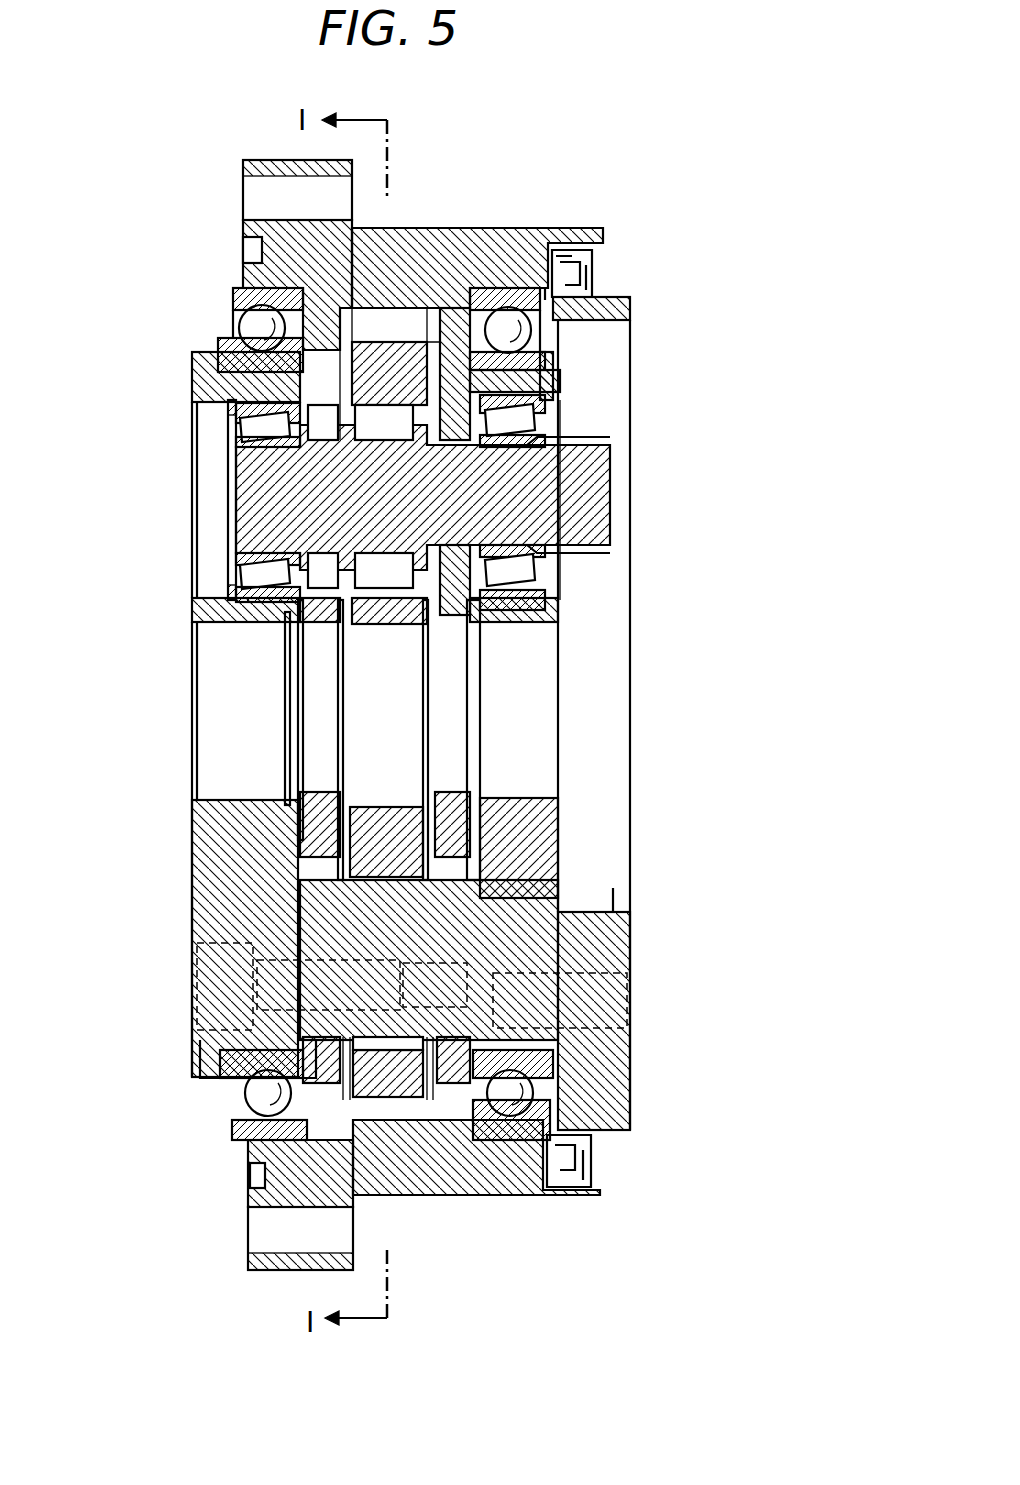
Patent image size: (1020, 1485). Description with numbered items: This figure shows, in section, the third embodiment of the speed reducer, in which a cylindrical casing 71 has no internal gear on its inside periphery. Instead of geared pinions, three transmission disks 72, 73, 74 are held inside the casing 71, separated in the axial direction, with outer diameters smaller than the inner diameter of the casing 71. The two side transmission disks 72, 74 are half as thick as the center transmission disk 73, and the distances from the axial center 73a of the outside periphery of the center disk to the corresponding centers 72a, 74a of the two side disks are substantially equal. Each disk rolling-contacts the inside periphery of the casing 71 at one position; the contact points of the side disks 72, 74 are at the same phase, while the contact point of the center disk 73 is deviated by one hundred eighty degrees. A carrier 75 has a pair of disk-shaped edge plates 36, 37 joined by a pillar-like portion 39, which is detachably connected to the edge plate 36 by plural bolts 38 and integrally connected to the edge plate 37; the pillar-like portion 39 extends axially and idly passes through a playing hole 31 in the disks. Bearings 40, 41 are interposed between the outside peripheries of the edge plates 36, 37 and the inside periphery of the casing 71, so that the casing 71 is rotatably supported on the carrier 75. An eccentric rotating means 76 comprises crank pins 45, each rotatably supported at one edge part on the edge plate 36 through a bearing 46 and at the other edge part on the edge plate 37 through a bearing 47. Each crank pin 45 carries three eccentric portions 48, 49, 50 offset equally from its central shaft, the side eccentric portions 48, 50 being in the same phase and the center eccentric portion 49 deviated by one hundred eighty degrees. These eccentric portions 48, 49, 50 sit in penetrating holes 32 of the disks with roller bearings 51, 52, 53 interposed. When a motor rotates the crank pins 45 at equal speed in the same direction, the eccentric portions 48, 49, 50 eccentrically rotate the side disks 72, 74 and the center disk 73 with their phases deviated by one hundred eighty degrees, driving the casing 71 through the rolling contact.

The playing hole 31 is at (330, 900).
The penetrating hole 32 is at (427, 622).
The edge plate 36 is at (233, 903).
The edge plate 37 is at (520, 797).
The bolt 38 is at (190, 990).
The pillar-like portion 39 is at (470, 907).
The bearing 40 is at (223, 347).
The bearing 41 is at (558, 356).
The crank pin 45 is at (583, 493).
The bearing 46 is at (236, 458).
The bearing 47 is at (513, 593).
The eccentric portion 48 is at (248, 462).
The eccentric portion 49 is at (387, 557).
The eccentric portion 50 is at (560, 452).
The roller bearing 51 is at (262, 515).
The roller bearing 52 is at (387, 417).
The roller bearing 53 is at (455, 520).
The casing 71 is at (403, 337).
The transmission disk 72 is at (323, 320).
The center 72a is at (277, 1207).
The transmission disk 73 is at (413, 348).
The center 73a is at (383, 1123).
The transmission disk 74 is at (448, 320).
The center 74a is at (440, 1120).
The carrier 75 is at (186, 826).
The eccentric rotating means 76 is at (582, 426).